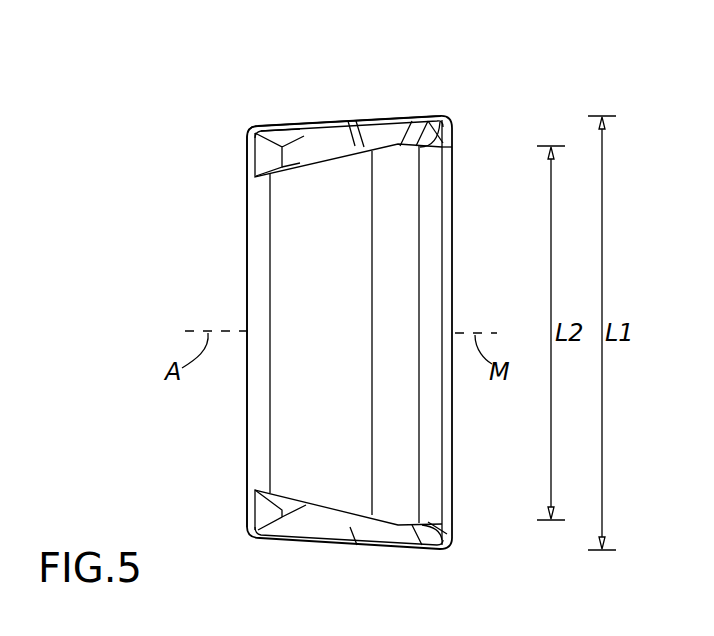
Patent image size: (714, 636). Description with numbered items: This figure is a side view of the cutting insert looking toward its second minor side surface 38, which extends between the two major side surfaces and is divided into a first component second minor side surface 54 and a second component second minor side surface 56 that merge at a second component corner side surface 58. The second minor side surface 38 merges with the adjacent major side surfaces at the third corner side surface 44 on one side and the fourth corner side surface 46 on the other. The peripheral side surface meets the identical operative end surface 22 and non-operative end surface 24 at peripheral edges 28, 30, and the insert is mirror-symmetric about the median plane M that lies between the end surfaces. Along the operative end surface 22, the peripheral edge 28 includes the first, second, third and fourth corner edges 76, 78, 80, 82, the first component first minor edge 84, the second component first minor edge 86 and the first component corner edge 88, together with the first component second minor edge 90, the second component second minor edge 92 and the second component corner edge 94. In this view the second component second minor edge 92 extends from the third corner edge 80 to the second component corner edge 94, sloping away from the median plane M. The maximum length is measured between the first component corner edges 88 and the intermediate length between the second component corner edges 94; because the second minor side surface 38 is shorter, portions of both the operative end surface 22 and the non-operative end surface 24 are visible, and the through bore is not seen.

The operative end surface 22 is at (313, 154).
The non-operative end surface 24 is at (315, 507).
The peripheral edge 28 is at (388, 114).
The peripheral edge 30 is at (329, 505).
The second minor side surface 38 is at (308, 414).
The third corner side surface 44 is at (257, 278).
The fourth corner side surface 46 is at (451, 190).
The first component second minor side surface 54 is at (432, 253).
The second component second minor side surface 56 is at (332, 315).
The second component corner side surface 58 is at (407, 315).
The first corner edge 76 is at (440, 115).
The second corner edge 78 is at (248, 133).
The third corner edge 80 is at (250, 166).
The fourth corner edge 82 is at (453, 147).
The first component first minor edge 84 is at (417, 122).
The second component first minor edge 86 is at (287, 121).
The first component corner edge 88 is at (348, 119).
The first component second minor edge 90 is at (430, 130).
The second component second minor edge 92 is at (303, 160).
The second component corner edge 94 is at (403, 143).